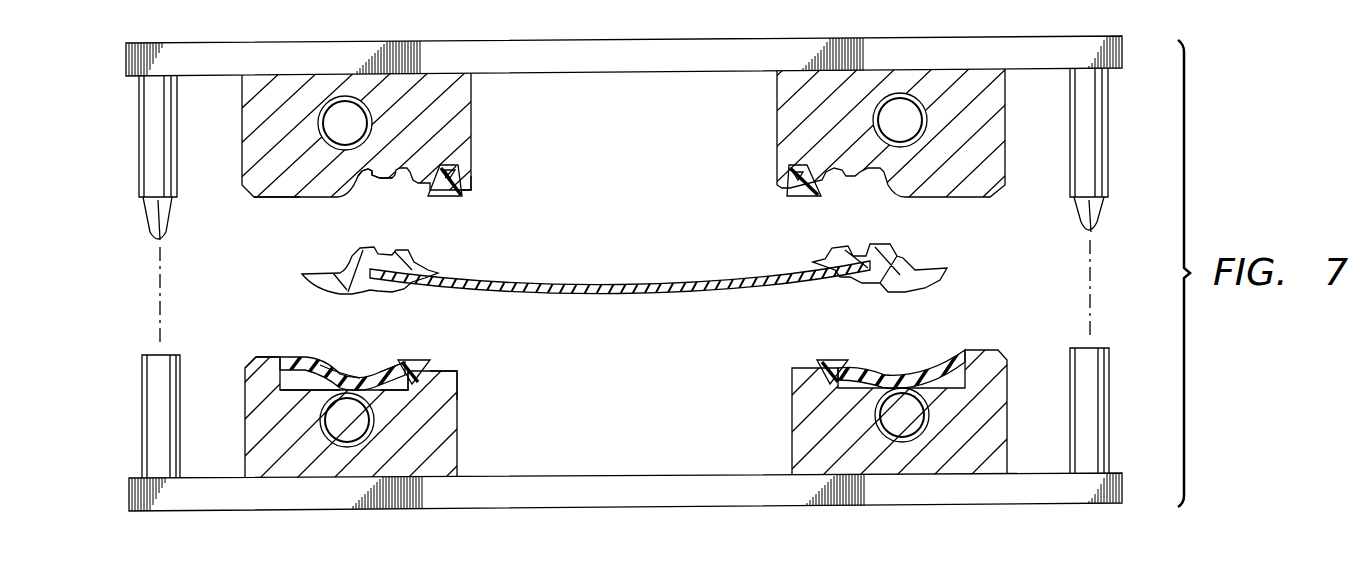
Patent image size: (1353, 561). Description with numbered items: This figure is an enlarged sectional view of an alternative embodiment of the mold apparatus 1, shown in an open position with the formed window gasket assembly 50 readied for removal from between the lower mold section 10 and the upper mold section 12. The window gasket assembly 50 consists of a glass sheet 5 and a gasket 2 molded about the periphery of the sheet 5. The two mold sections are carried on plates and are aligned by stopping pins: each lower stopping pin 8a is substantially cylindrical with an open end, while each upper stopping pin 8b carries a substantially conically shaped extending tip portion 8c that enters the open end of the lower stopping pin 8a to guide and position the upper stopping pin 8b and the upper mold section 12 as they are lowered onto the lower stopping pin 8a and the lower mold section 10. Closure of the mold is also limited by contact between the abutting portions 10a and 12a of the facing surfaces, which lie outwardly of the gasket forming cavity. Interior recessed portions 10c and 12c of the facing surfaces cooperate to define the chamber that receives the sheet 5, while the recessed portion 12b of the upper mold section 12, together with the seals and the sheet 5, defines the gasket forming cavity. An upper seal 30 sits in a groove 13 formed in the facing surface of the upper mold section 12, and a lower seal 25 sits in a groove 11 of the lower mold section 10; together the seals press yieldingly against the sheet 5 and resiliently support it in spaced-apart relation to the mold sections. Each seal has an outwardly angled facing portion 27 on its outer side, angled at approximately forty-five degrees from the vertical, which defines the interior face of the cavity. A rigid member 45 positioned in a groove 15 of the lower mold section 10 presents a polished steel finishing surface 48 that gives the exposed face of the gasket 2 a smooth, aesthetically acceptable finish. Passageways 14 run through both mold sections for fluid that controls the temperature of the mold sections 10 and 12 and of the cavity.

The mold apparatus 1 is at (72, 158).
The gasket 2 is at (340, 270).
The glass sheet 5 is at (604, 283).
The lower stopping pin 8a is at (142, 420).
The upper stopping pin 8b is at (140, 135).
The extending tip portion 8c is at (147, 220).
The lower mold section 10 is at (245, 428).
The abutting portion 10a is at (268, 356).
The interior recessed portion 10c is at (456, 371).
The groove 11 is at (424, 392).
The upper mold section 12 is at (242, 128).
The abutting portion 12a is at (265, 199).
The recessed portion 12b is at (368, 174).
The interior recessed portion 12c is at (464, 193).
The groove 13 is at (456, 166).
The passageway 14 is at (334, 135).
The groove 15 is at (305, 392).
The lower seal 25 is at (418, 362).
The angled facing portion 27 is at (402, 366).
The upper seal 30 is at (450, 198).
The rigid member 45 is at (297, 358).
The finishing surface 48 is at (338, 375).
The window gasket assembly 50 is at (958, 262).